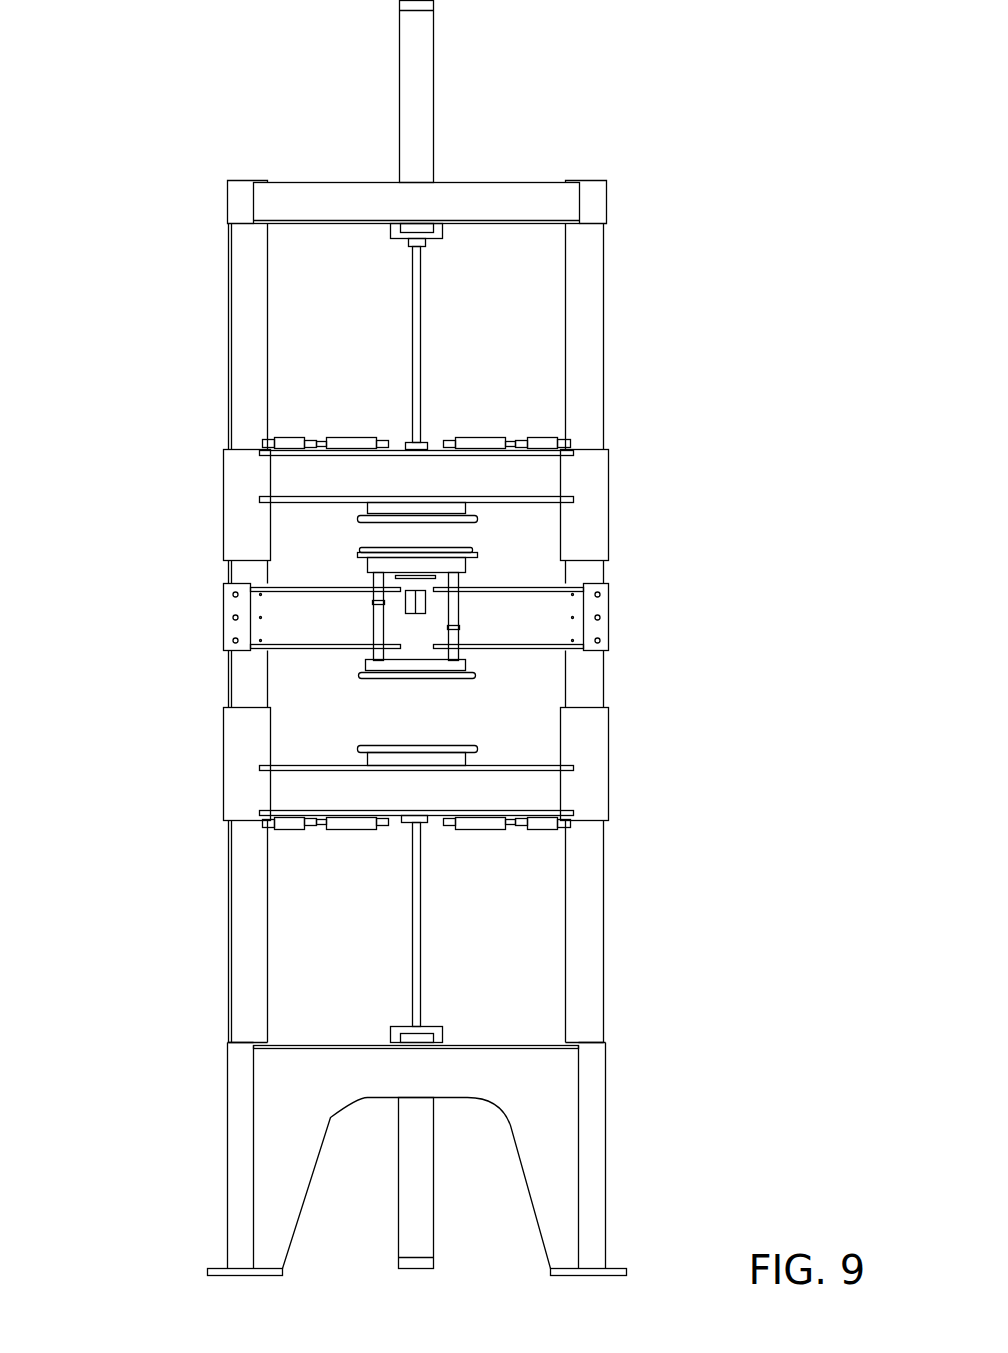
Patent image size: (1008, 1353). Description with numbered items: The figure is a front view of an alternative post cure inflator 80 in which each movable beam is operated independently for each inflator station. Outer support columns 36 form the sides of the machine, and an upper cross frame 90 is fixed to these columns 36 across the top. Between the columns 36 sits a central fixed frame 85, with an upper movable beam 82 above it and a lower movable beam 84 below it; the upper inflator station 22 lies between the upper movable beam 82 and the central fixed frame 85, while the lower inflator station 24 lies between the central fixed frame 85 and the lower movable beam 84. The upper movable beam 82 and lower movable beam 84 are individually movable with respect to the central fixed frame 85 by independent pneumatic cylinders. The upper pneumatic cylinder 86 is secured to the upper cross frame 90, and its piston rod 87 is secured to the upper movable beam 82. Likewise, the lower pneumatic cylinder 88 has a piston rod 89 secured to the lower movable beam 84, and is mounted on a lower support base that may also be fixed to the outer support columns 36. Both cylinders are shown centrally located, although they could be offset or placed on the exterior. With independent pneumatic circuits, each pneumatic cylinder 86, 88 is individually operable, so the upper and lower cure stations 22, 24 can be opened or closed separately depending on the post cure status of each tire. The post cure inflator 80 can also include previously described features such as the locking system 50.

The upper inflator station 22 is at (510, 557).
The lower inflator station 24 is at (510, 732).
The outer support columns 36 is at (228, 305).
The locking system 50 is at (492, 432).
The post cure inflator 80 is at (143, 573).
The upper movable beam 82 is at (553, 475).
The lower movable beam 84 is at (535, 788).
The central fixed frame 85 is at (535, 608).
The upper pneumatic cylinder 86 is at (433, 103).
The piston rod 87 is at (420, 318).
The lower pneumatic cylinder 88 is at (433, 1190).
The piston rod 89 is at (420, 955).
The upper cross frame 90 is at (508, 180).